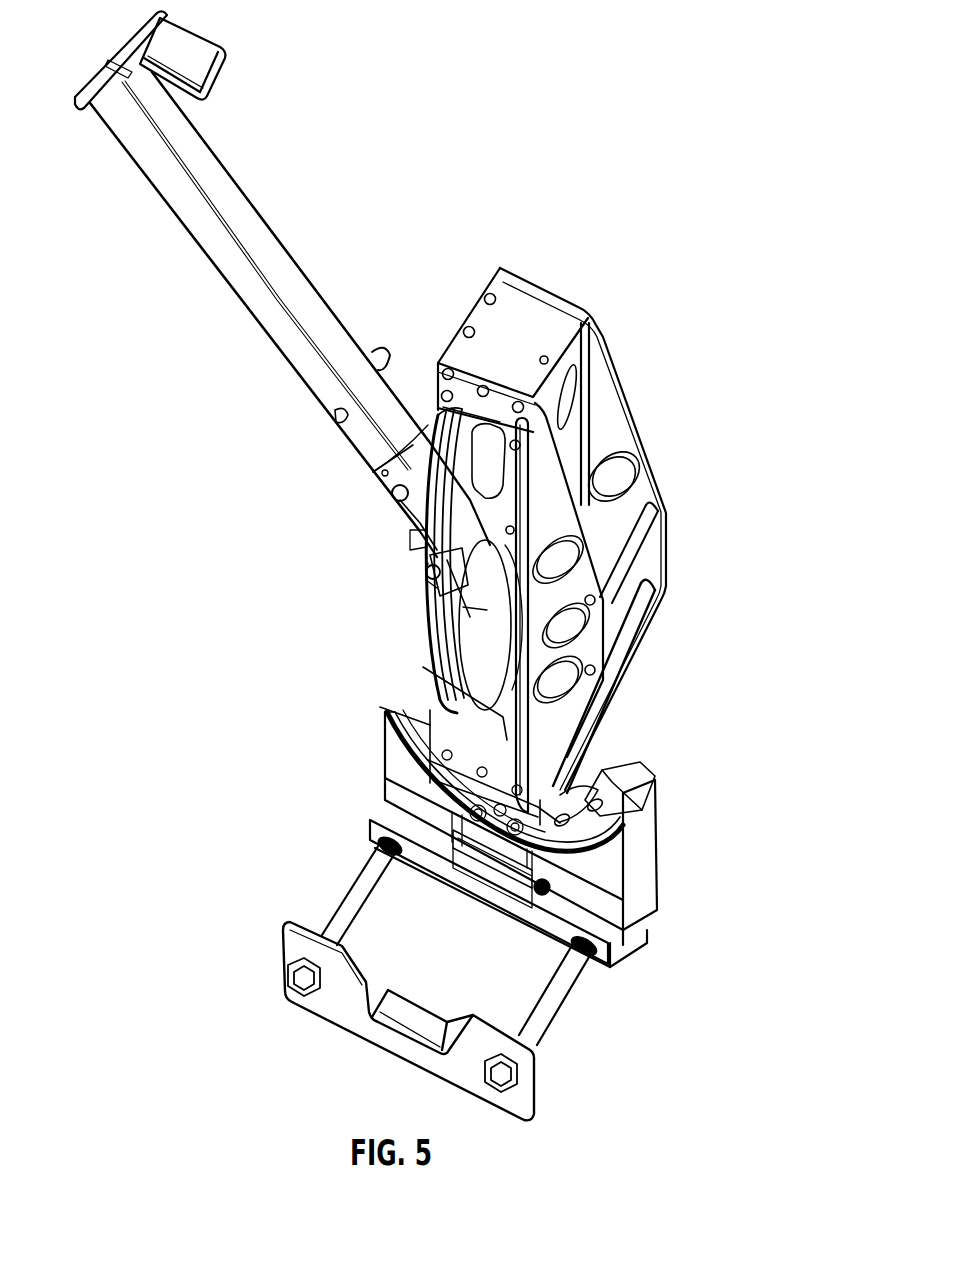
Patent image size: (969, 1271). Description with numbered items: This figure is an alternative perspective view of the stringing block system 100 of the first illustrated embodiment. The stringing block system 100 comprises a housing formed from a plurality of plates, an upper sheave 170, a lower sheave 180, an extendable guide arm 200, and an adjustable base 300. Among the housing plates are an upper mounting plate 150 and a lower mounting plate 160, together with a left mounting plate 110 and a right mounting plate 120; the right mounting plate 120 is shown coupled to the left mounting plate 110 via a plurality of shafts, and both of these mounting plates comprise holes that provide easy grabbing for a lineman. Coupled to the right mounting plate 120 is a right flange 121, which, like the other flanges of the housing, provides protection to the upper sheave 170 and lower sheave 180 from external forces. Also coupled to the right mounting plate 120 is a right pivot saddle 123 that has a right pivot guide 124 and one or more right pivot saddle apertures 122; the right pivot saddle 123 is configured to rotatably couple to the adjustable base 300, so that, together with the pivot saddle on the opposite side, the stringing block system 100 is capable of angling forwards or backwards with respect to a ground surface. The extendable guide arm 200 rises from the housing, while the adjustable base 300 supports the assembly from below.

The stringing block system 100 is at (700, 88).
The extendable guide arm 200 is at (283, 258).
The upper mounting plate 150 is at (373, 460).
The upper sheave 170 is at (463, 467).
The lower sheave 180 is at (430, 573).
The lower mounting plate 160 is at (422, 642).
The left mounting plate 110 is at (660, 586).
The right mounting plate 120 is at (623, 673).
The right flange 121 is at (603, 735).
The pivot bracket 122 is at (622, 770).
The right pivot saddle 123 is at (625, 843).
The right pivot guide 124 is at (502, 833).
The adjustable base 300 is at (353, 757).